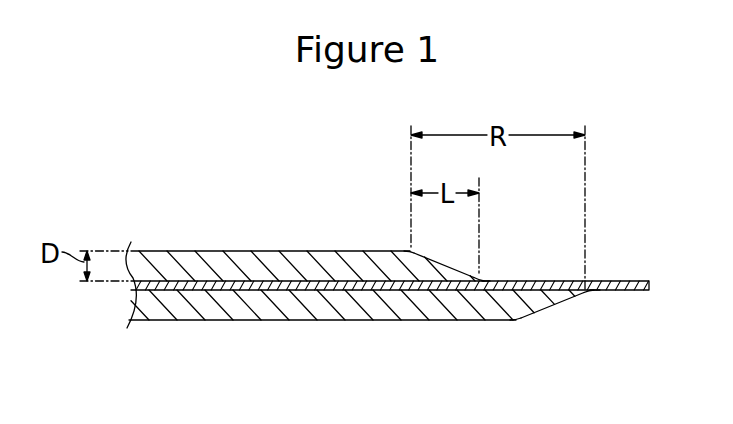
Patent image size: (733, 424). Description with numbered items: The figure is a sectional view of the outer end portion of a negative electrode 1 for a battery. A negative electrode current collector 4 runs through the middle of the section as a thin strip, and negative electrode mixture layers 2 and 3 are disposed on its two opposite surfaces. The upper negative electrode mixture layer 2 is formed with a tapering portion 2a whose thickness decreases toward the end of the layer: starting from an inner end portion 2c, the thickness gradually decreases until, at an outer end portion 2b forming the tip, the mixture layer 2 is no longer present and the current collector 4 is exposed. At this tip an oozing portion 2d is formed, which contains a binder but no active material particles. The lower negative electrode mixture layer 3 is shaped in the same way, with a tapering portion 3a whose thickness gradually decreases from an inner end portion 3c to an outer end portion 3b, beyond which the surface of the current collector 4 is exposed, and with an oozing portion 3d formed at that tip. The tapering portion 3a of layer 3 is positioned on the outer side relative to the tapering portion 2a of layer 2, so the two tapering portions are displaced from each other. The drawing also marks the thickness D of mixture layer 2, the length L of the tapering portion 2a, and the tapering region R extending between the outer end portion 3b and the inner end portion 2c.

The negative electrode 1 is at (268, 157).
The negative electrode mixture layer 2 is at (165, 258).
The tapering portion 2a is at (428, 258).
The outer end portion 2b is at (483, 276).
The inner end portion 2c is at (409, 250).
The oozing portion 2d is at (487, 278).
The negative electrode mixture layer 3 is at (272, 313).
The tapering portion 3a is at (543, 308).
The outer end portion 3b is at (588, 293).
The inner end portion 3c is at (519, 322).
The oozing portion 3d is at (597, 294).
The negative electrode current collector 4 is at (613, 281).